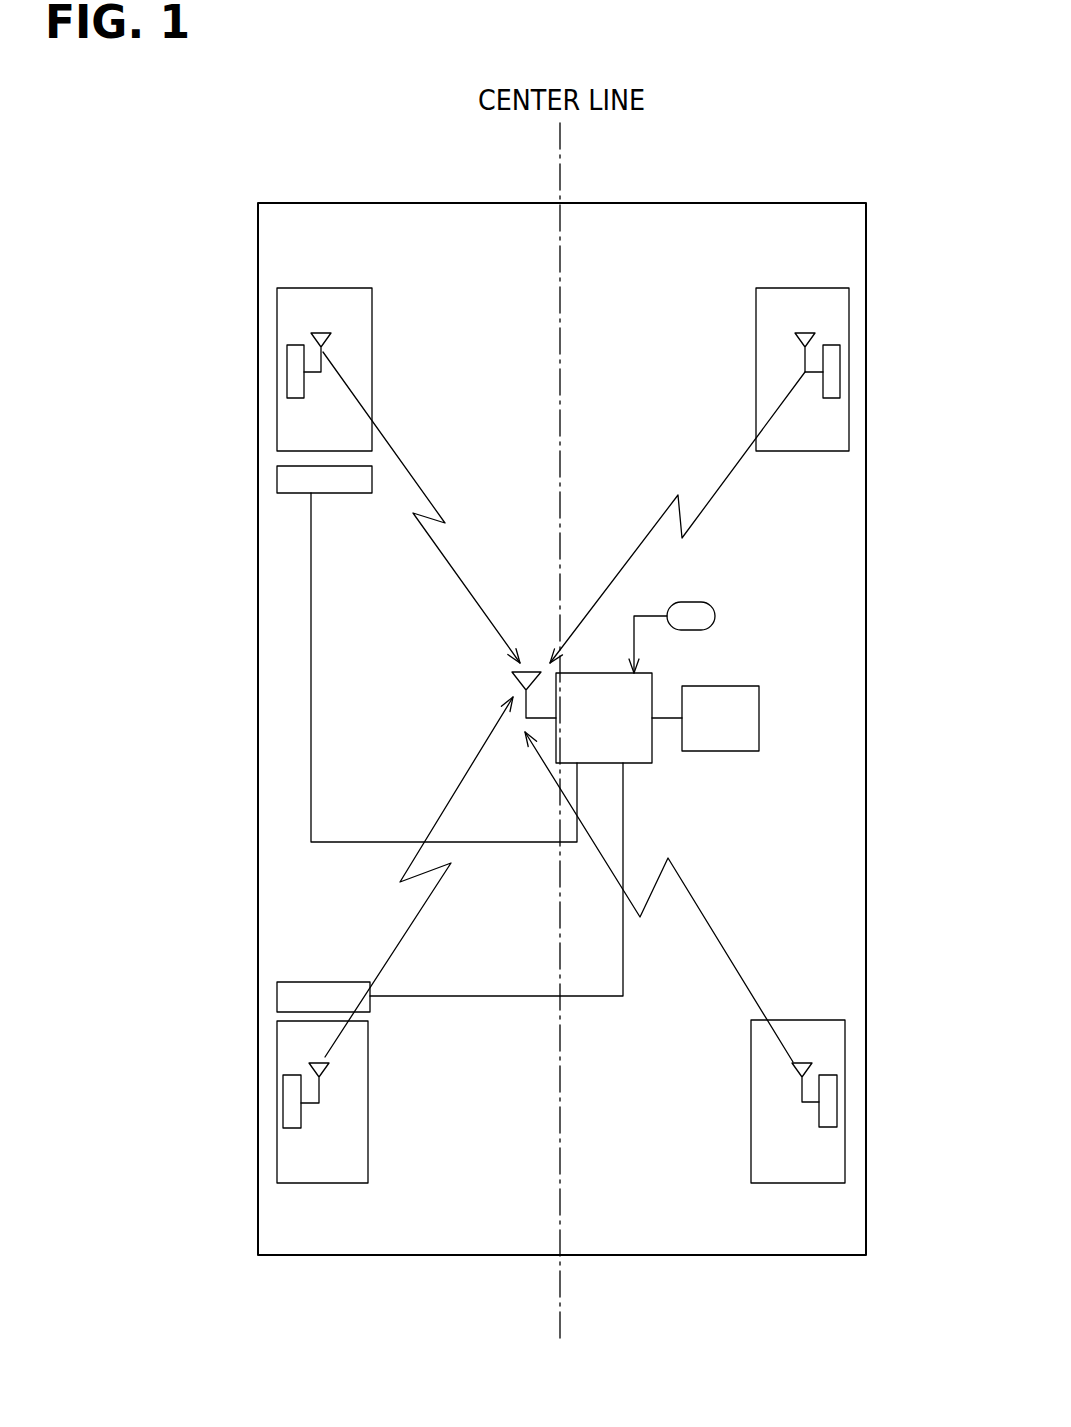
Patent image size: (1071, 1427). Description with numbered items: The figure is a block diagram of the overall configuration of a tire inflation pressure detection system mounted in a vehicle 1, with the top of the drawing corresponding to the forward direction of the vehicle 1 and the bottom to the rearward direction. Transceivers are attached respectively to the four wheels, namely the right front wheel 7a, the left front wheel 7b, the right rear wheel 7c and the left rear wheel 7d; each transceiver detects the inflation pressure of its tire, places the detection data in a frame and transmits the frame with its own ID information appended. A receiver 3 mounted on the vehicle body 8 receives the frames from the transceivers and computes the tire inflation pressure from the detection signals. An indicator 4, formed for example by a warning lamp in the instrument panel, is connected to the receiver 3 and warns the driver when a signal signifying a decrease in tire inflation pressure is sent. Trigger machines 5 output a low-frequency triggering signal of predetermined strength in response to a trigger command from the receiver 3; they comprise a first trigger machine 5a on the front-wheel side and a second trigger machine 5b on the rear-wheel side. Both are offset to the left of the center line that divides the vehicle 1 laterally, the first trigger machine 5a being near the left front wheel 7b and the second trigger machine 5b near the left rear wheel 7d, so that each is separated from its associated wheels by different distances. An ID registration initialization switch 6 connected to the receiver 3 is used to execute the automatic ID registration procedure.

The vehicle 1 is at (757, 203).
The receiver 3 is at (600, 673).
The indicator 4 is at (718, 752).
The trigger machine 5 is at (180, 622).
The first trigger machine 5a is at (277, 478).
The second trigger machine 5b is at (277, 995).
The ID registration initialization switch 6 is at (690, 603).
The right front wheel 7a is at (844, 336).
The left front wheel 7b is at (279, 336).
The right rear wheel 7c is at (841, 1135).
The left rear wheel 7d is at (277, 1136).
The vehicle body 8 is at (866, 650).